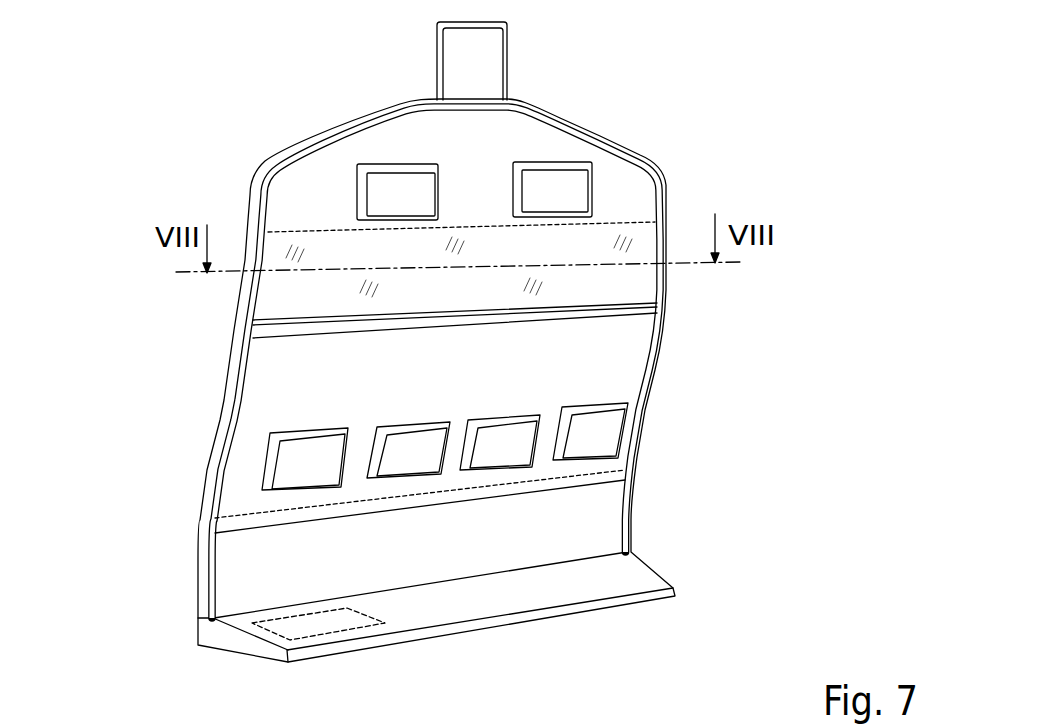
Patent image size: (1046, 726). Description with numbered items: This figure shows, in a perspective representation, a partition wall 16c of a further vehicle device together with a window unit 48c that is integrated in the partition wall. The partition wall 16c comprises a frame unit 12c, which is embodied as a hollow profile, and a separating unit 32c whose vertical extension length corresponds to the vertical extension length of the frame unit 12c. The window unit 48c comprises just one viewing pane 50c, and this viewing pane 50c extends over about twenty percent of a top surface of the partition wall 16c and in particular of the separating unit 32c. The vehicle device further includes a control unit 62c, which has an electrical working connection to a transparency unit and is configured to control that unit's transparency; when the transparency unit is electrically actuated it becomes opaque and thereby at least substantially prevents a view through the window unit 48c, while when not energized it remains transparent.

The partition wall 16c is at (700, 170).
The frame unit 12c is at (212, 361).
The viewing pane 50c is at (302, 291).
The separating unit 32c is at (622, 377).
The window unit 48c is at (677, 279).
The control unit 62c is at (352, 626).